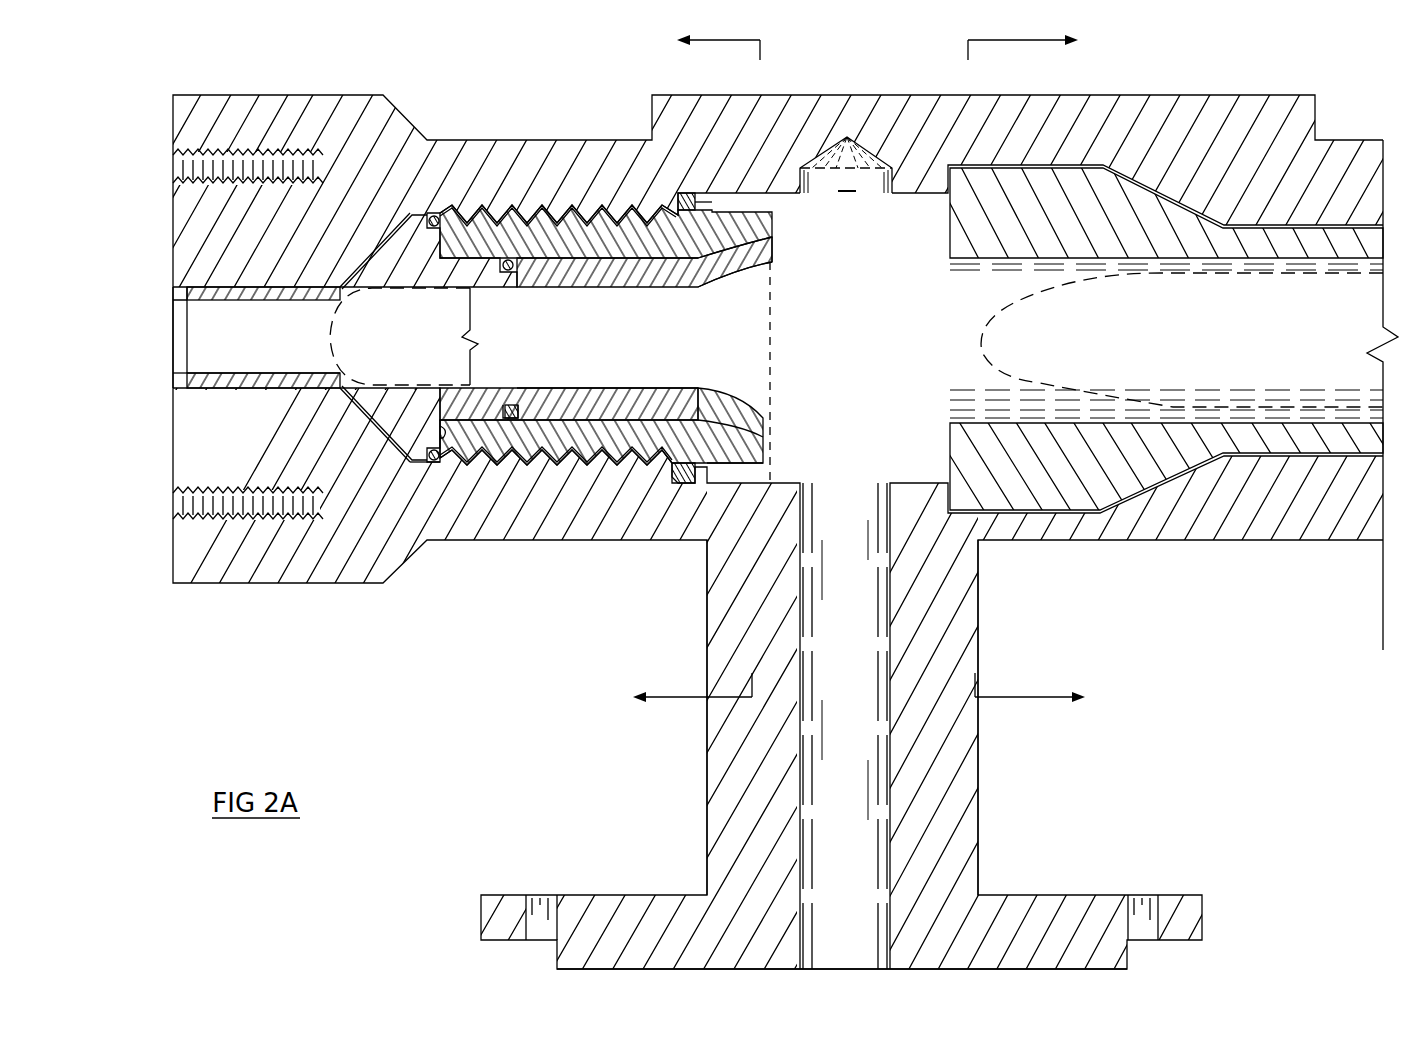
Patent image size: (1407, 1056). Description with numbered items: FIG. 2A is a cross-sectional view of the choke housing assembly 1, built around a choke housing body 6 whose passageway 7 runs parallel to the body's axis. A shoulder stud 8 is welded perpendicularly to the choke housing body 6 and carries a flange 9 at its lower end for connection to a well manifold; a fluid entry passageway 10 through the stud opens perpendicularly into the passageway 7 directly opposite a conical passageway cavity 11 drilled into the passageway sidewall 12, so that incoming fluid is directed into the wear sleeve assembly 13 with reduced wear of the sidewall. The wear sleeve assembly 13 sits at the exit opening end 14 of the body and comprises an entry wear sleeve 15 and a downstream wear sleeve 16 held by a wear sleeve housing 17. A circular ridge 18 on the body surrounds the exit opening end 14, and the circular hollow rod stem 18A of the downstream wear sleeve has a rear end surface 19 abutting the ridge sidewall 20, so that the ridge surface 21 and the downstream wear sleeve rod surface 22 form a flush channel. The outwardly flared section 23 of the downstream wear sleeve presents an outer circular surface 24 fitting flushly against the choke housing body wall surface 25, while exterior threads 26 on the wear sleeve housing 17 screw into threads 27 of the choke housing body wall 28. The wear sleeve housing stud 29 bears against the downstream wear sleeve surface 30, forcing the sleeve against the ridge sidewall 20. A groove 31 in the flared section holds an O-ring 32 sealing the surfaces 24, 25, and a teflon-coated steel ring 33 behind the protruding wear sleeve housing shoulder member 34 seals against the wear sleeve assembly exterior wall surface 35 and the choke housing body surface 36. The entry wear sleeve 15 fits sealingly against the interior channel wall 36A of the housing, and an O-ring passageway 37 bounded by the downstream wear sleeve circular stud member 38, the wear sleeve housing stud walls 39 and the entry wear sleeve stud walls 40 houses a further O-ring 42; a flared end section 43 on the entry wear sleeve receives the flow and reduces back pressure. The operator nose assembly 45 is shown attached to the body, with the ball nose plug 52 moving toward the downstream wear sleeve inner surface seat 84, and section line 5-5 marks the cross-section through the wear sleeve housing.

The choke housing assembly 1 is at (1200, 80).
The section line 5- 5 is at (683, 364).
The choke housing body 6 is at (255, 618).
The passageway 7 is at (852, 334).
The shoulder stud 8 is at (720, 637).
The flange 9 is at (1178, 908).
The fluid entry passageway 10 is at (826, 670).
The passageway cavity 11 is at (847, 183).
The passageway sidewall 12 is at (866, 153).
The wear sleeve assembly 13 is at (594, 398).
The exit opening end 14 is at (180, 338).
The entry wear sleeve 15 is at (612, 287).
The downstream wear sleeve 16 is at (347, 298).
The wear sleeve housing 17 is at (760, 471).
The circular ridge 18 is at (180, 377).
The circular hollow rod stem 18A is at (250, 385).
The rear end surface 19 is at (188, 292).
The ridge sidewall 20 is at (188, 296).
The ridge surface 21 is at (187, 301).
The downstream wear sleeve rod surface 22 is at (212, 372).
The outwardly flared section 23 is at (360, 416).
The outer circular surface 24 is at (365, 430).
The choke housing body wall surface 25 is at (395, 453).
The exterior threads 26 is at (500, 463).
The threads 27 is at (547, 458).
The choke housing body wall 28 is at (528, 142).
The wear sleeve housing stud 29 is at (468, 387).
The downstream wear sleeve surface 30 is at (442, 430).
The groove 31 is at (408, 460).
The O-ring 32 is at (434, 462).
The teflon-coated steel ring 33 is at (680, 193).
The wear sleeve housing shoulder member 34 is at (713, 200).
The wear sleeve assembly exterior wall surface 35 is at (672, 470).
The choke housing body surface 36 is at (677, 200).
The interior channel wall 36A is at (774, 242).
The O-ring passageway 37 is at (463, 435).
The downstream wear sleeve circular stud member 38 is at (510, 402).
The wear sleeve housing stud walls 39 is at (584, 262).
The entry wear sleeve stud walls 40 is at (558, 386).
The O-ring 42 is at (518, 402).
The flared end section 43 is at (735, 262).
The operator nose assembly 45 is at (1016, 221).
The ball nose plug 52 is at (1020, 300).
The downstream wear sleeve inner surface seat 84 is at (365, 386).